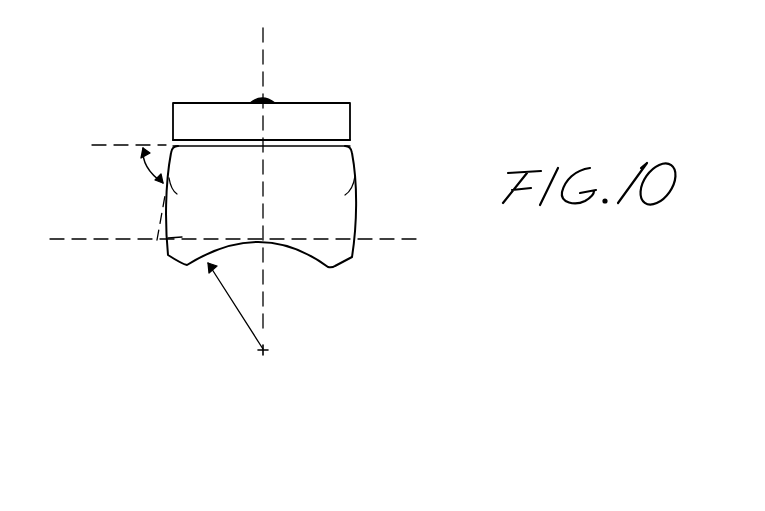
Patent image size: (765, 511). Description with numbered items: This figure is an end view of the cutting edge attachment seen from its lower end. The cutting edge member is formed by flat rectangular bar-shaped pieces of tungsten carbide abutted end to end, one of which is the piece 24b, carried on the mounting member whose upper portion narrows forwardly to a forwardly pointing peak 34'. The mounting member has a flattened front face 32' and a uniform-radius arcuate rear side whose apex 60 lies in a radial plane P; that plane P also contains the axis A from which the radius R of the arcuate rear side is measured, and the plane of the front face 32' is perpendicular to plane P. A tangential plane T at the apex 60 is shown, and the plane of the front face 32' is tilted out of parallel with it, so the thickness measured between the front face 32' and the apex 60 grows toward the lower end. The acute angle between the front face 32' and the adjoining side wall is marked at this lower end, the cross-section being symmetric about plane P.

The flat rectangular bar-shaped piece 24b is at (302, 120).
The flattened front face 32' is at (261, 99).
The forwardly pointing peak 34' is at (289, 62).
The apex 60 is at (270, 250).
The tangential plane T is at (405, 236).
The radius R is at (235, 306).
The radial plane P is at (267, 327).
The axis A is at (268, 355).